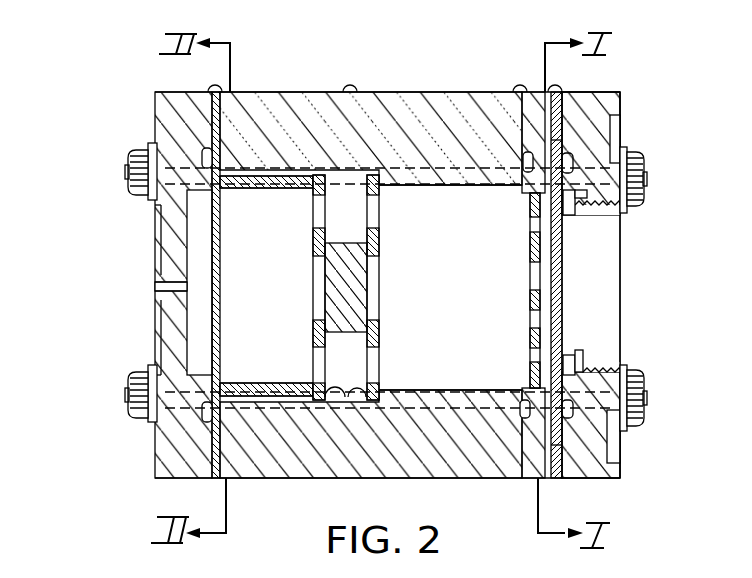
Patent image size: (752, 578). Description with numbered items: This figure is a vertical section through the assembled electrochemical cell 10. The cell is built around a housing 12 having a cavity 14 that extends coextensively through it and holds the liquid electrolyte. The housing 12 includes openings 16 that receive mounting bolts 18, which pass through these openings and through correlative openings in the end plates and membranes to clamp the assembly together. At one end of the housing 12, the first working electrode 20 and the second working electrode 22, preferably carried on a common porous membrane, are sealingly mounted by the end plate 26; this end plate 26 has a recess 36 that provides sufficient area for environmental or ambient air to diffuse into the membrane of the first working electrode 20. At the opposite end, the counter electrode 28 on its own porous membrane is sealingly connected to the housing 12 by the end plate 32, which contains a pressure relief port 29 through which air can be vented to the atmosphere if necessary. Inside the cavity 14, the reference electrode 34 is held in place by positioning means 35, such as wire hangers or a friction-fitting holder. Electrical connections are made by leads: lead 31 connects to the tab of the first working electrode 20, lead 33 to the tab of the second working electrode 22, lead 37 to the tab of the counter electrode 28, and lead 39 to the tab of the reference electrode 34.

The electrochemical cell 10 is at (720, 57).
The housing 12 is at (413, 92).
The cavity 14 is at (503, 280).
The openings 16 is at (597, 207).
The mounting bolts 18 is at (645, 164).
The first working electrode 20 is at (562, 445).
The second working electrode 22 is at (553, 150).
The end plate 26 is at (600, 106).
The counter electrode 28 is at (212, 226).
The pressure relief port 29 is at (153, 283).
The lead 31 is at (555, 92).
The end plate 32 is at (172, 99).
The lead 33 is at (518, 90).
The reference electrode 34 is at (322, 278).
The positioning means 35 is at (348, 335).
The recess 36 is at (605, 253).
The lead 37 is at (214, 91).
The lead 39 is at (350, 90).